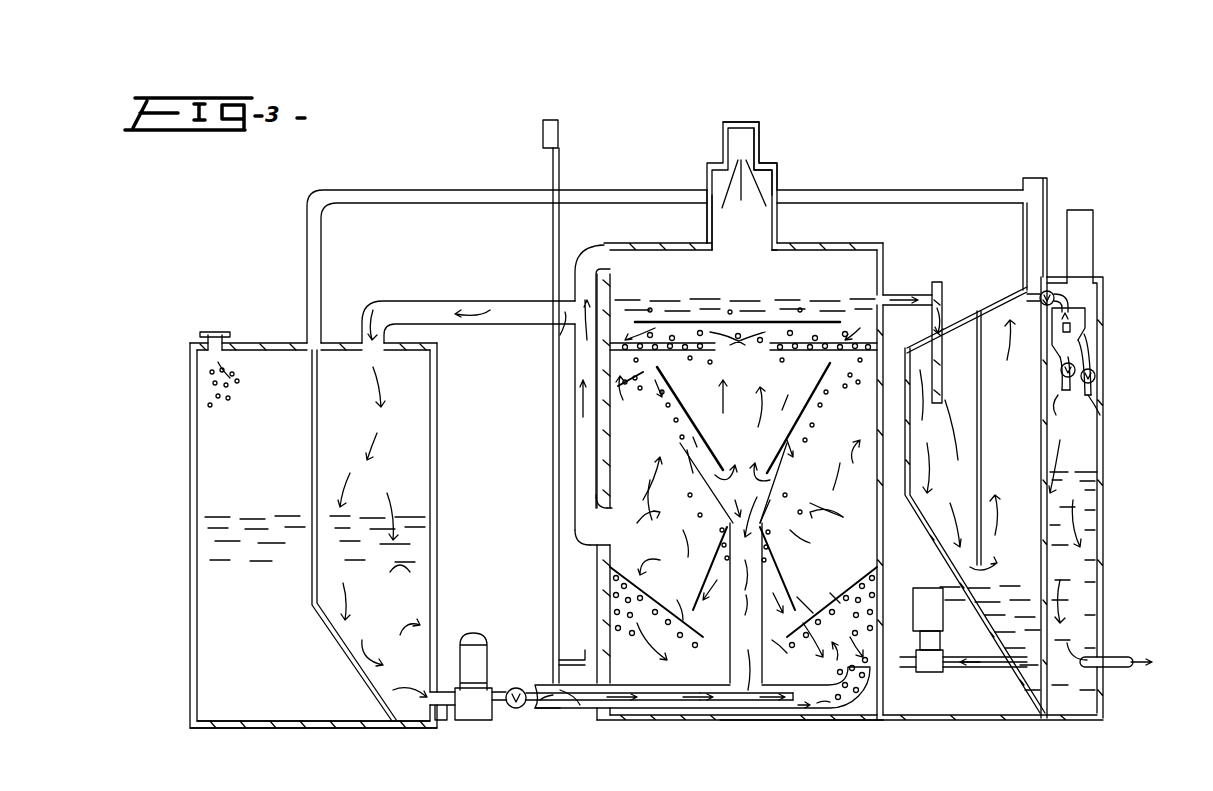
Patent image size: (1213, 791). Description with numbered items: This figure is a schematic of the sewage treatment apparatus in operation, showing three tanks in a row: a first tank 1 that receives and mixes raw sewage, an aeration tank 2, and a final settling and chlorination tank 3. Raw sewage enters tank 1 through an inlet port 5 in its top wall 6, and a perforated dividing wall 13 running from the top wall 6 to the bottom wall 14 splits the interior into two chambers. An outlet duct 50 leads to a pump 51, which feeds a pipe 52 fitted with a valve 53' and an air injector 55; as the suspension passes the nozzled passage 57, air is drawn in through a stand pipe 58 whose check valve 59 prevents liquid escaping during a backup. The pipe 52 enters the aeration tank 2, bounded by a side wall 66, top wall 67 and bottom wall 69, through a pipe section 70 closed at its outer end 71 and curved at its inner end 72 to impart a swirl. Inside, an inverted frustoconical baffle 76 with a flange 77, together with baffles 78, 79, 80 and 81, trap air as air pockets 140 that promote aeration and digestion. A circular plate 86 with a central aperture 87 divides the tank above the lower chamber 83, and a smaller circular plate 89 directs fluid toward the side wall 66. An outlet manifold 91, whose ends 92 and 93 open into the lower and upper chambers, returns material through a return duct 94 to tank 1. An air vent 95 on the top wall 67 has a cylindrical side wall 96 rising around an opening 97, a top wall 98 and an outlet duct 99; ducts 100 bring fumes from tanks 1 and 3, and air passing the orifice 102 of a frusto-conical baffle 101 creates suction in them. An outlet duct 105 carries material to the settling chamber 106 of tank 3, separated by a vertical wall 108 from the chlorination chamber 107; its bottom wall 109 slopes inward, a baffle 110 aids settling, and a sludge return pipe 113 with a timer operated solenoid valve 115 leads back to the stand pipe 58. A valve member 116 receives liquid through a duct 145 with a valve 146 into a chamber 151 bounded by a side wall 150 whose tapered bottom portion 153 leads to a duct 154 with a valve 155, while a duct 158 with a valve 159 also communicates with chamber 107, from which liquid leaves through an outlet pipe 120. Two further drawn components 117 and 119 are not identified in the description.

The first tank 1 is at (331, 525).
The aeration tank 2 is at (738, 449).
The final settling and chlorination tank 3 is at (1116, 328).
The inlet port 5 is at (214, 333).
The top wall 6 is at (258, 350).
The dividing wall 13 is at (312, 480).
The bottom wall 14 is at (310, 728).
The outlet duct 50 is at (450, 720).
The pump 51 is at (455, 690).
The pipe 52 is at (540, 705).
The valve 53' is at (523, 677).
The air injector 55 is at (580, 715).
The nozzled passage 57 is at (548, 710).
The stand pipe 58 is at (552, 246).
The check valve 59 is at (558, 125).
The side wall 66 is at (883, 524).
The top wall 67 is at (840, 243).
The bottom wall 69 is at (852, 720).
The pipe section 70 is at (810, 710).
The outer end 71 is at (660, 712).
The inner end 72 is at (870, 690).
The inverted frustoconical baffle 76 is at (780, 500).
The flange 77 is at (634, 400).
The baffle 78 is at (700, 540).
The baffle 79 is at (782, 560).
The baffle 80 is at (722, 520).
The baffle 81 is at (745, 425).
The chamber 83 is at (615, 618).
The circular plate 86 is at (680, 365).
The central aperture 87 is at (760, 340).
The smaller circular plate 89 is at (755, 322).
The outlet manifold 91 is at (575, 510).
The end 92 is at (590, 548).
The end 93 is at (560, 397).
The return duct 94 is at (452, 308).
The air vent 95 is at (760, 191).
The cylindrical side wall 96 is at (712, 224).
The opening 97 is at (712, 246).
The top wall 98 is at (770, 165).
The outlet duct 99 is at (722, 128).
The ducts 100 is at (606, 180).
The frusto-conical baffle 101 is at (730, 184).
The orifice 102 is at (745, 193).
The outlet duct 105 is at (903, 293).
The settling chamber 106 is at (950, 565).
The chlorination chamber 107 is at (1075, 580).
The vertical wall 108 is at (1045, 475).
The bottom wall 109 is at (1005, 660).
The baffle 110 is at (982, 545).
The sludge return pipe 113 is at (580, 652).
The timer operated solenoid valve 115 is at (935, 618).
The valve member 116 is at (1099, 341).
The conduit 117 is at (1050, 187).
The vent 119 is at (1085, 222).
The outlet pipe 120 is at (1118, 655).
The air pockets 140 is at (800, 358).
The duct 145 is at (1025, 290).
The valve 146 is at (1054, 292).
The side wall 150 is at (1057, 345).
The chamber 151 is at (1085, 312).
The bottom portion 153 is at (1060, 357).
The duct 154 is at (1100, 412).
The valve 155 is at (1068, 411).
The duct 158 is at (1095, 380).
The valve 159 is at (1078, 371).